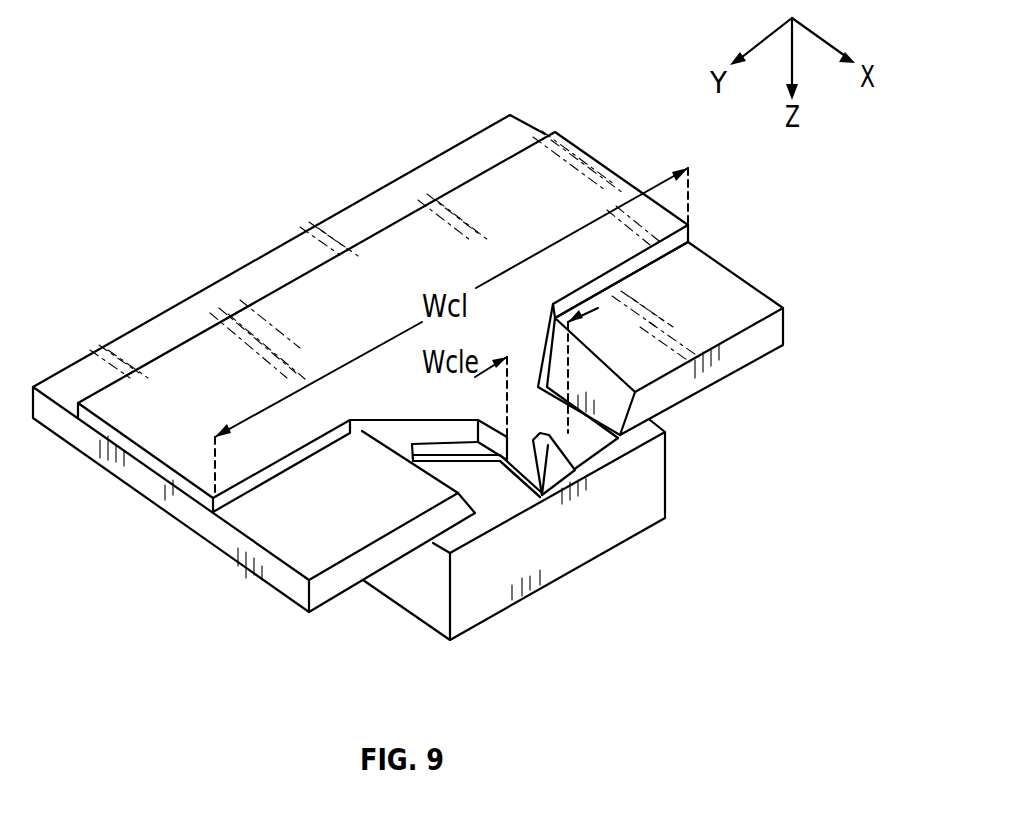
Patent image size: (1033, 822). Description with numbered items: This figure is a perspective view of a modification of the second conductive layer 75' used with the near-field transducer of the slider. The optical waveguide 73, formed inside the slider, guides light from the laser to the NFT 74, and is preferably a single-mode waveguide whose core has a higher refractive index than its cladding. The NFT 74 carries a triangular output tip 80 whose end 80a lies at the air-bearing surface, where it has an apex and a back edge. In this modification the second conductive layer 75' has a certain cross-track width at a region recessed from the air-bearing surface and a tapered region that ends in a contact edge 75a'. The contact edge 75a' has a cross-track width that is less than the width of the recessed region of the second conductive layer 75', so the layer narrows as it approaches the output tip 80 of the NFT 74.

The optical waveguide 73 is at (488, 522).
The NFT 74 is at (712, 288).
The second conductive layer 75' is at (383, 317).
The contact edge 75a' is at (645, 409).
The triangular output tip 80 is at (538, 465).
The end of the output tip 80a is at (558, 477).